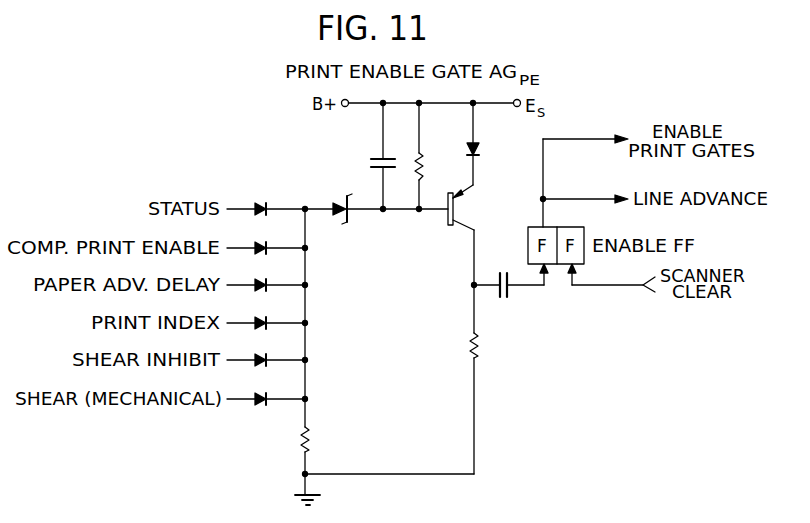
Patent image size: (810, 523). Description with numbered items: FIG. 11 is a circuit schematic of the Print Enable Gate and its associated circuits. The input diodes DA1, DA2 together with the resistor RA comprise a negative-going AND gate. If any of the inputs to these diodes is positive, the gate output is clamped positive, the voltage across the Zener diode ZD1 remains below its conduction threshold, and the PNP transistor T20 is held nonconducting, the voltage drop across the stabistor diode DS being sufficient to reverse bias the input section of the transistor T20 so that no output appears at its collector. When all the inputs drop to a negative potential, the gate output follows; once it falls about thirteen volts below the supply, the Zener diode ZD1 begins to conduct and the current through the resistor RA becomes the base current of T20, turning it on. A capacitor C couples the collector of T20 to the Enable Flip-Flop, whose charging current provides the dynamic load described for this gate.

The diode DA1 is at (262, 199).
The diode DA2 is at (266, 238).
The Zener diode ZD1 is at (355, 217).
The stabistor diode DS is at (487, 144).
The PNP transistor T20 is at (477, 207).
The resistor RA is at (320, 439).
The coupling capacitor C is at (509, 292).